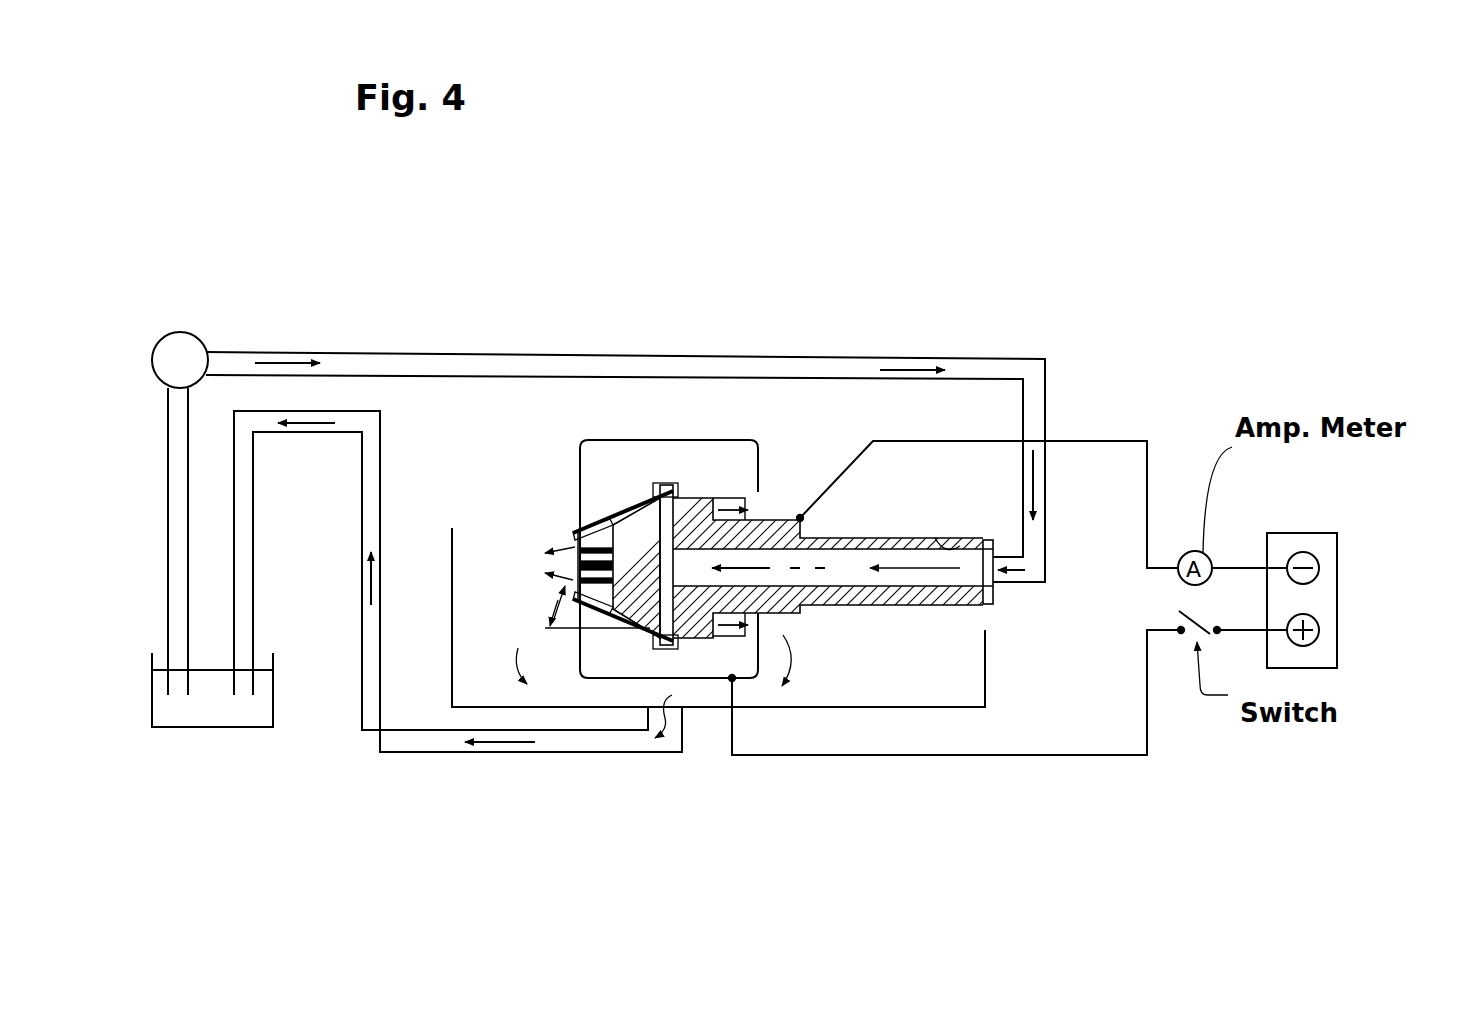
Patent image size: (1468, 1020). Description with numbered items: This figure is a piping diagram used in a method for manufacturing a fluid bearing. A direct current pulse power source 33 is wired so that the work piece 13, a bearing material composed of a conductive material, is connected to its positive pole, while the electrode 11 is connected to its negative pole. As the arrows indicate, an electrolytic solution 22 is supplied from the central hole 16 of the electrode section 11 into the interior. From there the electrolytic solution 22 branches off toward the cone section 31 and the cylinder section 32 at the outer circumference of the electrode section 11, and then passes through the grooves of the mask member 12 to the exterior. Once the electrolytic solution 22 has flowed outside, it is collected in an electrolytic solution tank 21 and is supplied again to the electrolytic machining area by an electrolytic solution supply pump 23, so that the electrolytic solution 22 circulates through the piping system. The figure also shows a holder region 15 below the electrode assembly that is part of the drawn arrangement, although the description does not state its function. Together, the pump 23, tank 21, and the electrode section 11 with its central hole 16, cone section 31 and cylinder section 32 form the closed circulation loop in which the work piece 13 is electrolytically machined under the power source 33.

The electrode 11 is at (786, 612).
The mask member 12 is at (748, 492).
The work piece 13 is at (758, 437).
The electrode holder 15 is at (921, 609).
The central hole 16 is at (960, 538).
The electrolytic solution tank 21 is at (220, 716).
The electrolytic solution 22 is at (1037, 395).
The electrolytic solution supply pump 23 is at (210, 342).
The cone section 31 is at (620, 510).
The cylinder section 32 is at (699, 488).
The direct current pulse power source 33 is at (1330, 588).